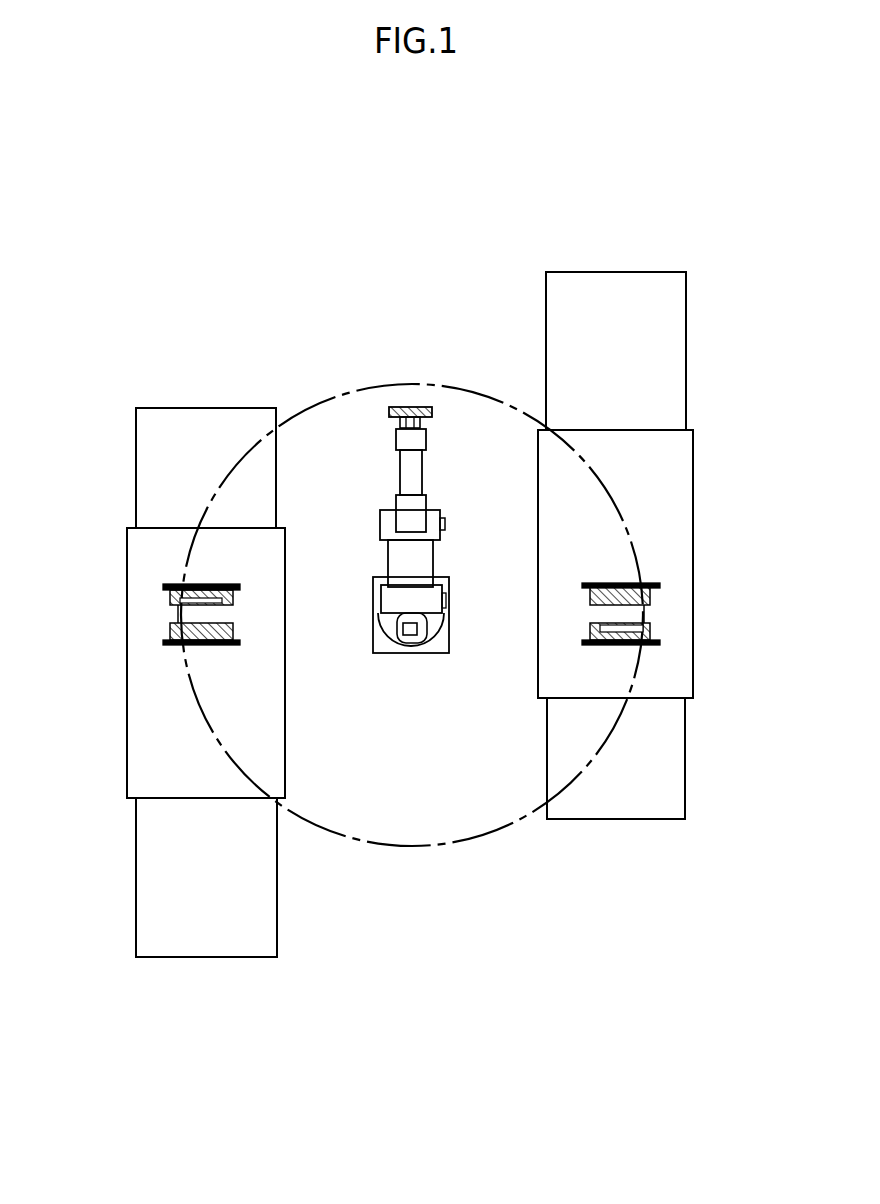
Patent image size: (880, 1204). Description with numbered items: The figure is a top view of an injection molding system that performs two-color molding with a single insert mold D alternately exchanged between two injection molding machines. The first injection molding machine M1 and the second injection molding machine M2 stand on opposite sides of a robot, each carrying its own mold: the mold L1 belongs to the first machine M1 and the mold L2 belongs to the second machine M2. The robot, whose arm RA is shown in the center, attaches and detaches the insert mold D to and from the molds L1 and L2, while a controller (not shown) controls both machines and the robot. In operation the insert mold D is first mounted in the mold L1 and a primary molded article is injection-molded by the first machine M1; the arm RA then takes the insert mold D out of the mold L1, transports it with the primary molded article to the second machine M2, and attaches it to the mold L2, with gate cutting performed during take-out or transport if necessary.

The first injection molding machine M1 is at (633, 835).
The second injection molding machine M2 is at (203, 393).
The mold of the first injection molding machine L1 is at (670, 600).
The mold of the second injection molding machine L2 is at (148, 647).
The insert mold D is at (407, 393).
The arm of the robot RA is at (408, 668).